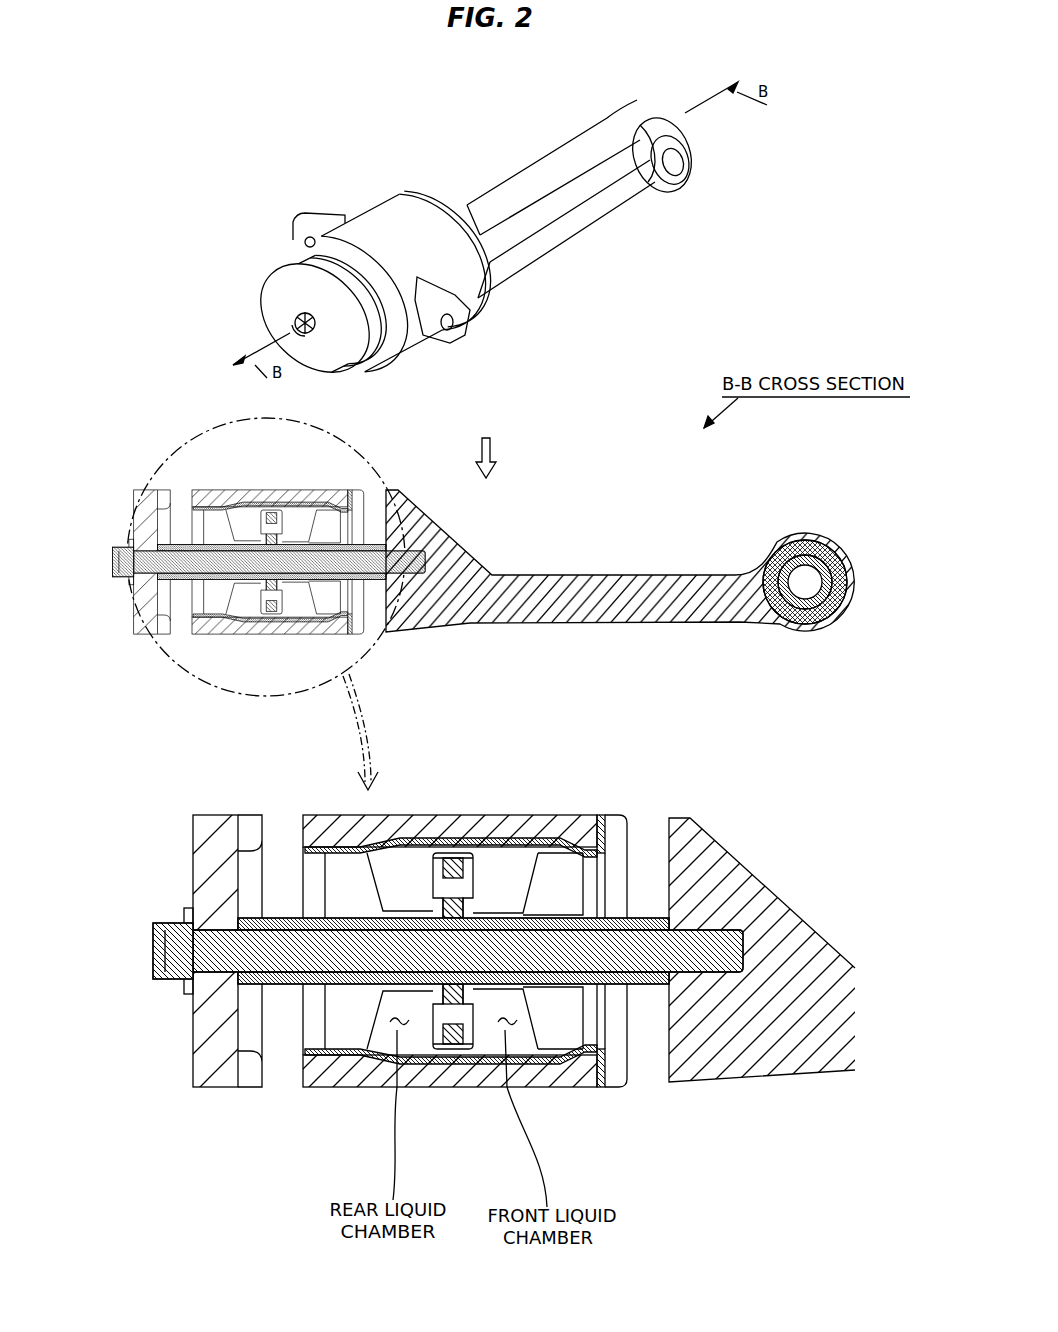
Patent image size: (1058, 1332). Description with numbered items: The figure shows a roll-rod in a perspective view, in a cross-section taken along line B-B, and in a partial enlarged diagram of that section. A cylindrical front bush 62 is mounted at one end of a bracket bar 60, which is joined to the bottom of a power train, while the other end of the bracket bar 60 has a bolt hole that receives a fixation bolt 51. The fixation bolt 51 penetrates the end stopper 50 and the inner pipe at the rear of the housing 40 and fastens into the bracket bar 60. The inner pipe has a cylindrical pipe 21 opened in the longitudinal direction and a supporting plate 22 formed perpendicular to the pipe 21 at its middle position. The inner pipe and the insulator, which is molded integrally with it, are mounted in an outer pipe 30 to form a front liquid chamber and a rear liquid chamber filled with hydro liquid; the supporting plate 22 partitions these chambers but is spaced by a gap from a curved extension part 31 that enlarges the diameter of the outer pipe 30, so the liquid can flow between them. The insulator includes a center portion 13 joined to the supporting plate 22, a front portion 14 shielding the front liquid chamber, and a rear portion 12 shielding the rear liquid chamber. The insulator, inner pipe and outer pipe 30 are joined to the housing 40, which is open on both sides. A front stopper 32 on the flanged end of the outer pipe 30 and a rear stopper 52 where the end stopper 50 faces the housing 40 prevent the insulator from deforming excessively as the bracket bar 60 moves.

The rear portion 12 is at (342, 1027).
The center portion 13 is at (470, 1033).
The front portion 14 is at (567, 1033).
The pipe 21 is at (285, 918).
The supporting plate 22 is at (440, 847).
The outer pipe 30 is at (550, 845).
The extension part 31 is at (470, 850).
The front stopper 32 is at (618, 1077).
The housing 40 is at (357, 237).
The end stopper 50 is at (290, 262).
The fixation bolt 51 is at (292, 323).
The rear stopper 52 is at (257, 1067).
The bracket bar 60 is at (583, 212).
The front bush 62 is at (653, 183).